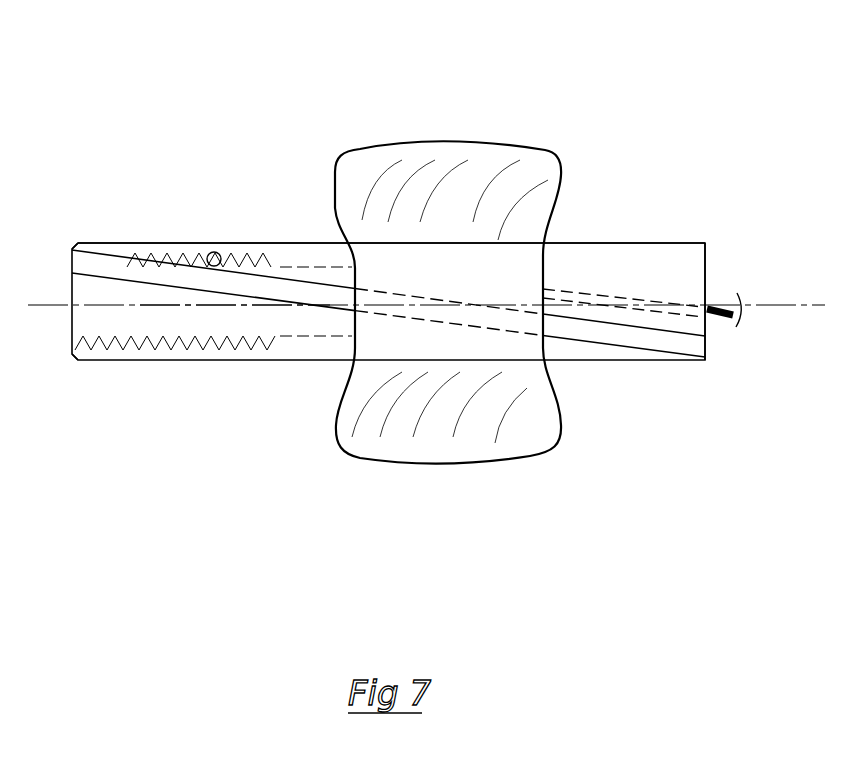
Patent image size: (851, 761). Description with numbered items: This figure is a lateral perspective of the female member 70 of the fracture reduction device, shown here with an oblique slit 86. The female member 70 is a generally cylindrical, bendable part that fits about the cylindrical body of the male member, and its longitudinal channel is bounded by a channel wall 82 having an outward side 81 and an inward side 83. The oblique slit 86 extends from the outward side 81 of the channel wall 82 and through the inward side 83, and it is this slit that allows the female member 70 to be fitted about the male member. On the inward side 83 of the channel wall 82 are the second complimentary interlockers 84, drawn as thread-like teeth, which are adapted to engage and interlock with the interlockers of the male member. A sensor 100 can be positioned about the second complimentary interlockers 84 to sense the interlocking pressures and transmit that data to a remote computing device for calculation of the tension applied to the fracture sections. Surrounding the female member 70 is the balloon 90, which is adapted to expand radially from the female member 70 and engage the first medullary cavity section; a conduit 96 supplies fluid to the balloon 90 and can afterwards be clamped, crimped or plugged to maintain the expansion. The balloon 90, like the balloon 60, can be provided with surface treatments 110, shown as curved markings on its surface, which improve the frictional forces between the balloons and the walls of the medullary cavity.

The balloon 60 is at (441, 281).
The female member 70 is at (382, 317).
The outward side 81 is at (105, 250).
The channel wall 82 is at (307, 242).
The inward side 83 is at (280, 293).
The second complimentary interlockers 84 is at (128, 347).
The oblique slit 86 is at (608, 328).
The balloon 90 is at (453, 138).
The conduit 96 is at (595, 293).
The sensors 100 is at (207, 245).
The surface treatments 110 is at (428, 180).